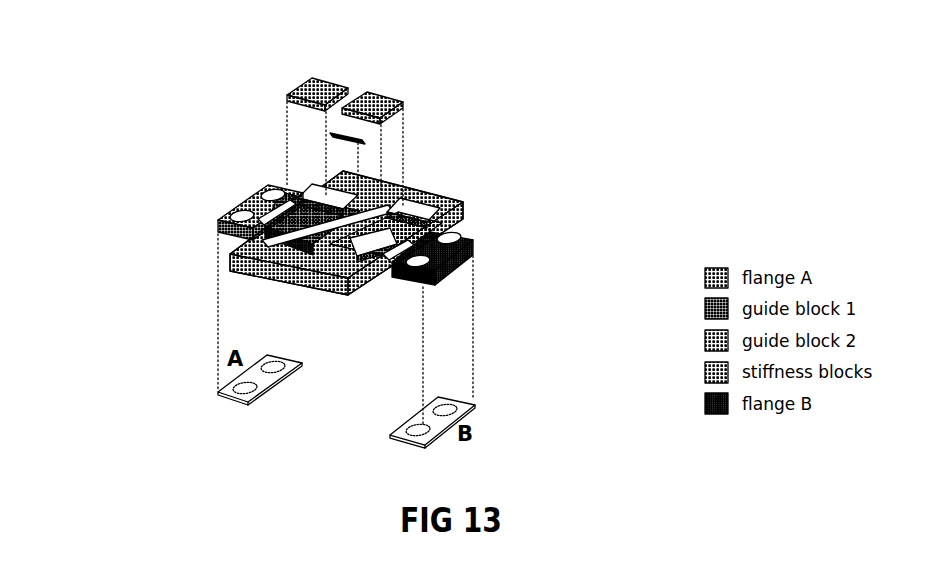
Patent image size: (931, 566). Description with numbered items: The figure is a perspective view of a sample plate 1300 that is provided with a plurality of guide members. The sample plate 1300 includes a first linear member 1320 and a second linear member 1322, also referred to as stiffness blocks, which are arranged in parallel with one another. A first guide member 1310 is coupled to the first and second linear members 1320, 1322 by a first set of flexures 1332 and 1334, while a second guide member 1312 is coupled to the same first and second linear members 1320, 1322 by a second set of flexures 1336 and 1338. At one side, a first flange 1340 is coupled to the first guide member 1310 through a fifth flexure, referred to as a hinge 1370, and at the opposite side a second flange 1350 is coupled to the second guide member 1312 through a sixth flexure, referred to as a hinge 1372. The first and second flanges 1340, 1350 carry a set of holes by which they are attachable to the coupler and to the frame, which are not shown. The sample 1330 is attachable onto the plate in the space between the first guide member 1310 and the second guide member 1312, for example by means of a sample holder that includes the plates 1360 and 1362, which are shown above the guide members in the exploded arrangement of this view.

The sample plate 1300 is at (70, 66).
The first guide member 1310 is at (233, 260).
The second guide member 1312 is at (393, 280).
The first linear member 1320 is at (250, 285).
The second linear member 1322 is at (463, 213).
The sample 1330 is at (328, 136).
The flexure of first set 1332 is at (298, 178).
The flexure of first set 1334 is at (327, 292).
The flexure of second set 1336 is at (388, 182).
The flexure of second set 1338 is at (440, 195).
The first flange 1340 is at (240, 202).
The second flange 1350 is at (465, 262).
The sample holder plate 1360 is at (320, 87).
The sample holder plate 1362 is at (387, 97).
The hinge 1370 is at (258, 190).
The hinge 1372 is at (440, 293).